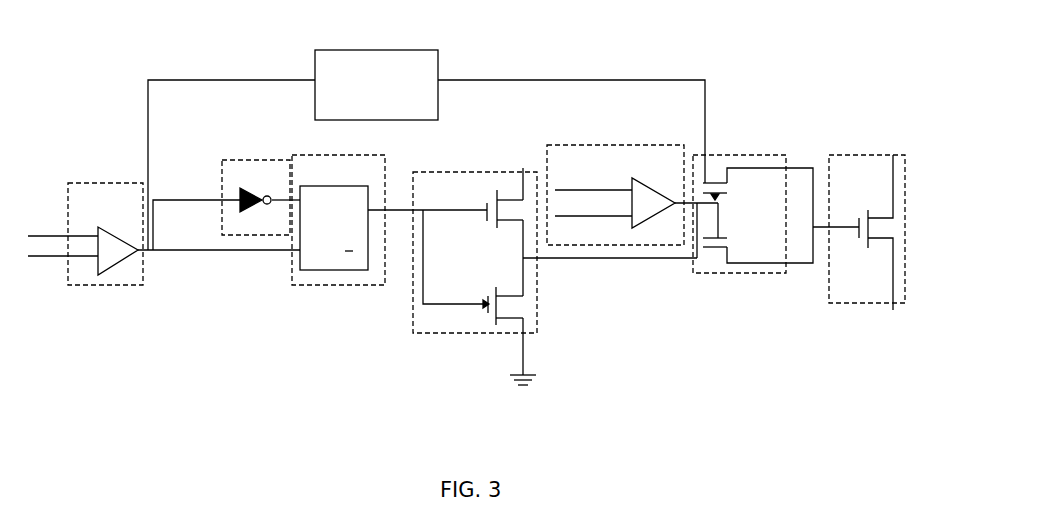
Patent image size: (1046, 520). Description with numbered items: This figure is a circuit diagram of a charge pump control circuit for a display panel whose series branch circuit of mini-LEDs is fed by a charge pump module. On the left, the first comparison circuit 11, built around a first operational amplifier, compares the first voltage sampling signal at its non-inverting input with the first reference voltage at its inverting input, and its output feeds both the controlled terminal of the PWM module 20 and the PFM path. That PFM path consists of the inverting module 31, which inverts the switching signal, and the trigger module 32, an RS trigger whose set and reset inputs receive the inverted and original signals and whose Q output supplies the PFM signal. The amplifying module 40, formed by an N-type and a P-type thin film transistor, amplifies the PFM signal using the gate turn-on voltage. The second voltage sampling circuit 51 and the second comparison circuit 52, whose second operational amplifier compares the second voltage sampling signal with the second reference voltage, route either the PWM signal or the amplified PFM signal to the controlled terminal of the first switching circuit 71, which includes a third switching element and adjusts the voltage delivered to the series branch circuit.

The first comparison circuit 11 is at (88, 184).
The PWM module 20 is at (378, 50).
The inverting module 31 is at (240, 160).
The trigger module 32 is at (350, 156).
The amplifying module 40 is at (537, 318).
The second voltage sampling circuit 51 is at (628, 147).
The second comparison circuit 52 is at (733, 155).
The first switching circuit 71 is at (870, 155).